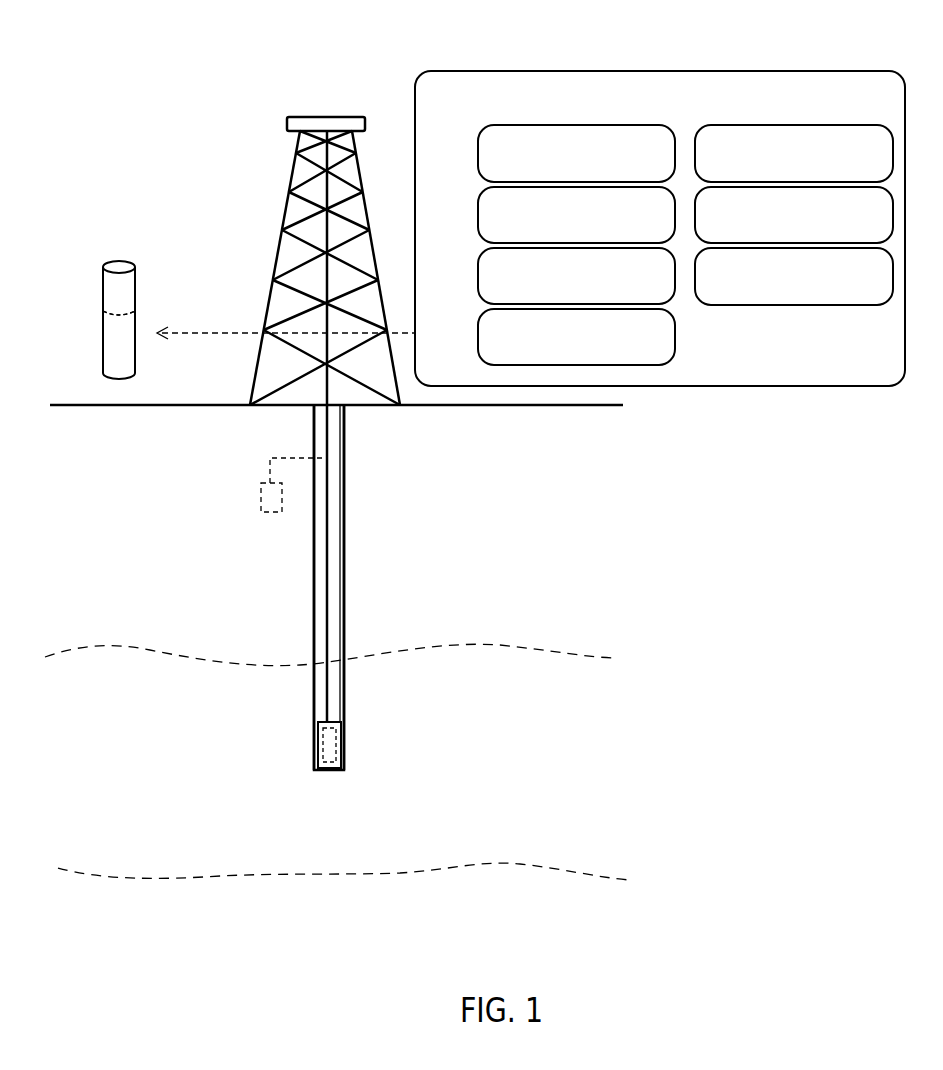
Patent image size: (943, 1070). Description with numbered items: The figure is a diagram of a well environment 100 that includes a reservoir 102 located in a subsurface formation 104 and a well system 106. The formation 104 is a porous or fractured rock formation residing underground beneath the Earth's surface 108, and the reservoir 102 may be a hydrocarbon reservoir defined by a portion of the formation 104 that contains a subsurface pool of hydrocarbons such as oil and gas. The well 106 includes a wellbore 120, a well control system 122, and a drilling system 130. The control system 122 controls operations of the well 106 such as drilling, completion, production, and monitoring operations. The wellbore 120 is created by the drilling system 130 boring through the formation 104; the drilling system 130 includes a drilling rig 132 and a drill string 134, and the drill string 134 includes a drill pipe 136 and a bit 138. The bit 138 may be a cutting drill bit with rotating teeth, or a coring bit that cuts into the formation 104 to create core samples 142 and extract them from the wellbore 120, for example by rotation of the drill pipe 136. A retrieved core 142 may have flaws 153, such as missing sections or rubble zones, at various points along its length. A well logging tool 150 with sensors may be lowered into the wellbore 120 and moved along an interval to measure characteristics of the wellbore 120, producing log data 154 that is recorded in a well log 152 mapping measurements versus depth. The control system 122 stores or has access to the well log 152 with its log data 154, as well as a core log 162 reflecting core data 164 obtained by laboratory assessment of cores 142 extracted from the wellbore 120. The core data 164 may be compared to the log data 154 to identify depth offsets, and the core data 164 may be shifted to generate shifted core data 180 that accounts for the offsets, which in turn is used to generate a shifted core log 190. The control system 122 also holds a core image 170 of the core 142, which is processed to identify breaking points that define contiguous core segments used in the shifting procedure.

The well environment 100 is at (103, 42).
The reservoir 102 is at (535, 769).
The formation 104 is at (529, 564).
The well system 106 is at (177, 160).
The surface 108 is at (540, 408).
The wellbore 120 is at (348, 440).
The well control system 122 is at (458, 131).
The drilling system 130 is at (262, 280).
The drilling rig 132 is at (305, 115).
The drill string 134 is at (350, 505).
The drill pipe 136 is at (334, 558).
The bit 138 is at (345, 727).
The core 142 is at (104, 262).
The well logging tool 150 is at (259, 491).
The well log 152 is at (594, 175).
The flaws 153 is at (100, 305).
The log data 154 is at (594, 235).
The core log 162 is at (594, 296).
The core data 164 is at (594, 358).
The core image 170 is at (812, 175).
The shifted core data 180 is at (812, 235).
The shifted core log 190 is at (812, 296).